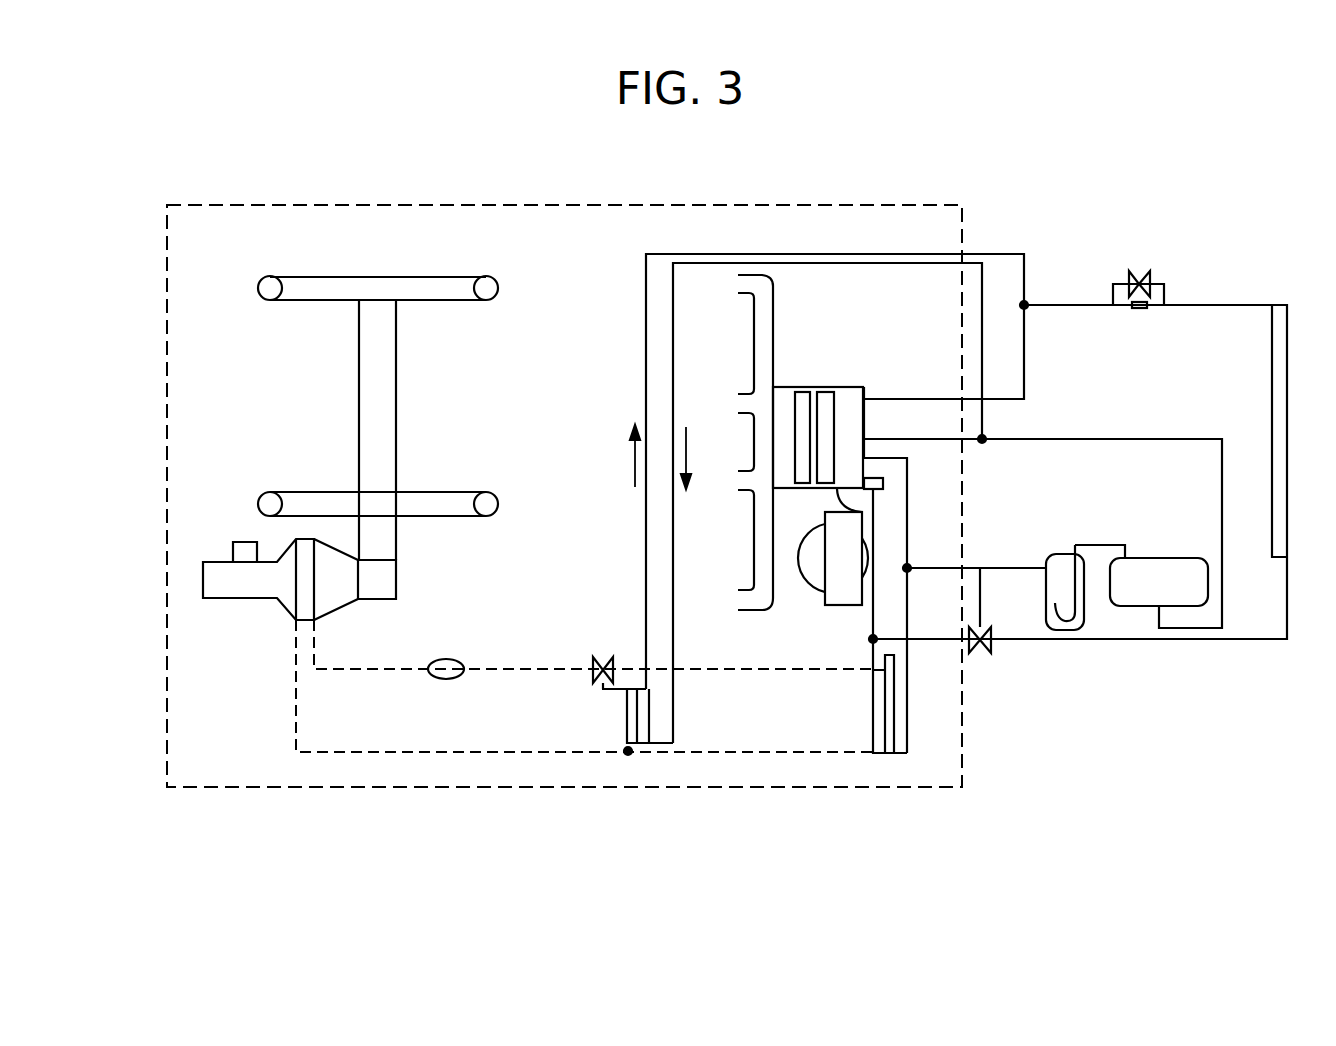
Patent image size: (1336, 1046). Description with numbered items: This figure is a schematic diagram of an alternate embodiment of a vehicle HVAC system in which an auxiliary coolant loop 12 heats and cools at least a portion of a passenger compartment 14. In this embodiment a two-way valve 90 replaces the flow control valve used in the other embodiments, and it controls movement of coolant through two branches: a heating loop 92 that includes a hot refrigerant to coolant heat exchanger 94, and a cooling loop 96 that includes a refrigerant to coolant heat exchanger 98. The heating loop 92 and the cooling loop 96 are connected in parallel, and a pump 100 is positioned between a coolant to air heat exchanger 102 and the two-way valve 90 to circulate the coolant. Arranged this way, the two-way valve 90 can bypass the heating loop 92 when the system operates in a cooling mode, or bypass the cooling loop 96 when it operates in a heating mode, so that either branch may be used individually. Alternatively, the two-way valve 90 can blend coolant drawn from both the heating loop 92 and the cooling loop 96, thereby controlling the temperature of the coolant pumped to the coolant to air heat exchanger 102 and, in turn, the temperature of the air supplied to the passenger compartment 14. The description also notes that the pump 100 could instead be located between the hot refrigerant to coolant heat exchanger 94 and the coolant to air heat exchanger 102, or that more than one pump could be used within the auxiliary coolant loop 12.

The passenger compartment 14 is at (167, 380).
The auxiliary coolant loop 12 is at (342, 756).
The coolant to air heat exchanger 102 is at (295, 605).
The pump 100 is at (446, 658).
The two-way valve 90 is at (598, 655).
The heating loop 92 is at (600, 694).
The hot refrigerant to coolant heat exchanger 94 is at (628, 755).
The cooling loop 96 is at (803, 758).
The refrigerant to coolant heat exchanger 98 is at (880, 757).